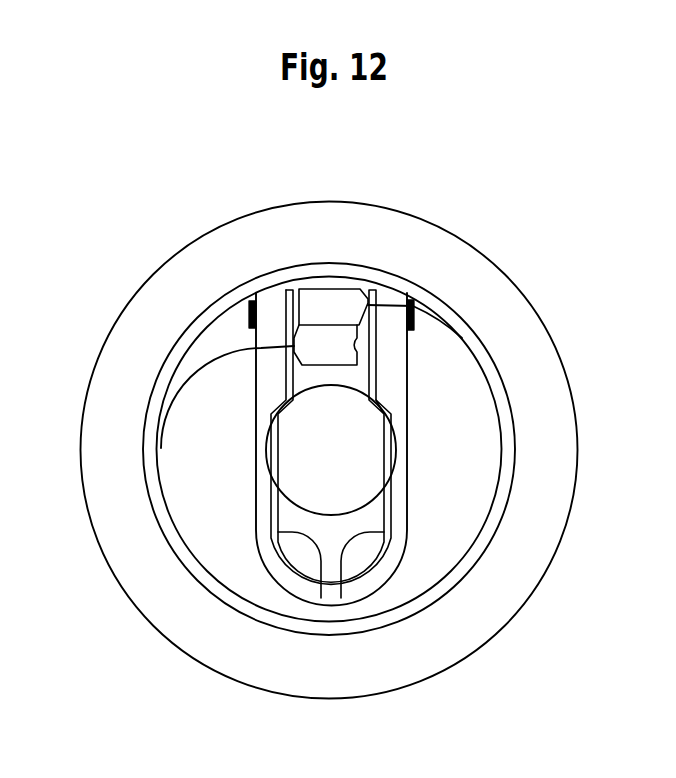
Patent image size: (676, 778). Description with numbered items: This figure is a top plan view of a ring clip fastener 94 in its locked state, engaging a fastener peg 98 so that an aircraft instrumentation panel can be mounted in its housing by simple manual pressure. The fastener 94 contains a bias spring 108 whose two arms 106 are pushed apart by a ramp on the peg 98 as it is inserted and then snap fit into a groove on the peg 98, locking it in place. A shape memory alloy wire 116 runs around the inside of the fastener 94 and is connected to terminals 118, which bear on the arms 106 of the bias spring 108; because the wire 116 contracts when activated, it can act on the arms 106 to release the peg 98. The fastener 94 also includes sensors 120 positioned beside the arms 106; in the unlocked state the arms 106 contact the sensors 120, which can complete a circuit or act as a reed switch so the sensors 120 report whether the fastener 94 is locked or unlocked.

The fastener 94 is at (308, 184).
The fastener peg 98 is at (333, 488).
The arms 106 is at (273, 525).
The bias spring 108 is at (277, 487).
The shape memory alloy wire 116 is at (200, 368).
The terminals 118 is at (315, 342).
The sensors 120 is at (248, 318).